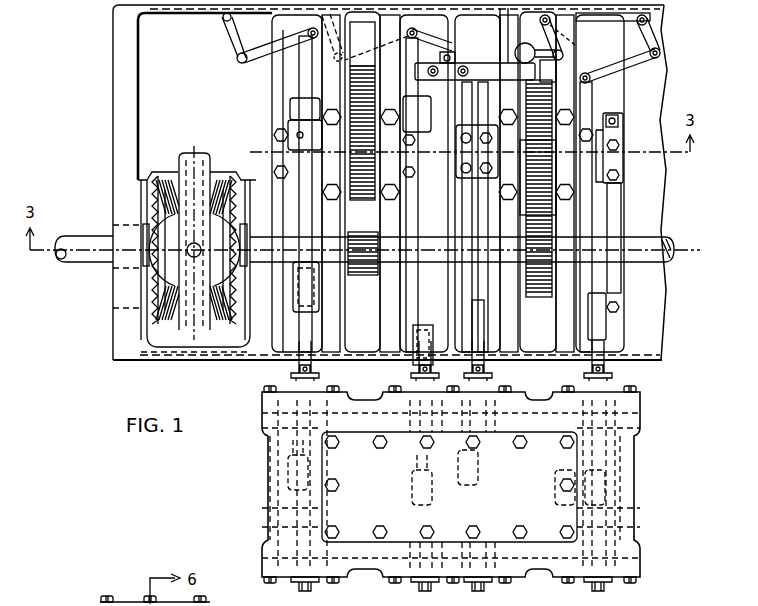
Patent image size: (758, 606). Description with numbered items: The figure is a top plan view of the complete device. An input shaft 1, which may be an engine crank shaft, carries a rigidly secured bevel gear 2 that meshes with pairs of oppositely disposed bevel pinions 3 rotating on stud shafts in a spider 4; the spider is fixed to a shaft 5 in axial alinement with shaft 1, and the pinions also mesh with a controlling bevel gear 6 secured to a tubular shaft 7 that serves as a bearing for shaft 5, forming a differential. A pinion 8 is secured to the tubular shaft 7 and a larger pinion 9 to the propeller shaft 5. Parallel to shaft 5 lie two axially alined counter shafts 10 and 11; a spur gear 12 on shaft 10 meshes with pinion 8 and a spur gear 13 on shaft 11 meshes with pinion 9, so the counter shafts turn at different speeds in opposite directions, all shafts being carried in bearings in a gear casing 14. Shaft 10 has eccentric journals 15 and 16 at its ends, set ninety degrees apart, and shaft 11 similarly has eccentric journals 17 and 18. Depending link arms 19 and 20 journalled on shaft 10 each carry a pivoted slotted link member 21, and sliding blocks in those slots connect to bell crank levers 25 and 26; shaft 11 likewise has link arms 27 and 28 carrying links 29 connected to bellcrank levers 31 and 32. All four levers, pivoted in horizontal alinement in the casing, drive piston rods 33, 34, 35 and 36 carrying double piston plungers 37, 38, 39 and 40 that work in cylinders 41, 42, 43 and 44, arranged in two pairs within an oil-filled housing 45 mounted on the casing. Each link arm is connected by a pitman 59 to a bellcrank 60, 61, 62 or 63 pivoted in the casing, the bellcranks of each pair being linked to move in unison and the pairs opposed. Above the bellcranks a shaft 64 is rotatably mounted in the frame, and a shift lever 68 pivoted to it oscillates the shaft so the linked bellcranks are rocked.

The shaft 1 is at (89, 238).
The bevel gear 2 is at (152, 197).
The bevel pinions 3 is at (175, 176).
The spider 4 is at (192, 151).
The shaft 5 is at (673, 258).
The controlling bevel gear 6 is at (237, 178).
The tubular shaft 7 is at (246, 328).
The pinion 8 is at (358, 276).
The pinion 9 is at (538, 182).
The counter shaft 10 is at (296, 123).
The counter shaft 11 is at (625, 125).
The spur gear 12 is at (333, 48).
The spur gear 13 is at (548, 90).
The gear casing 14 is at (125, 89).
The eccentric journal 15 is at (290, 141).
The eccentric journal 16 is at (448, 130).
The eccentric journal 17 is at (470, 125).
The eccentric journal 18 is at (624, 172).
The link arm 19 is at (298, 102).
The link arm 20 is at (418, 149).
The link member 21 is at (285, 74).
The bell crank lever 25 is at (306, 278).
The bell crank lever 26 is at (433, 342).
The link arm 27 is at (529, 199).
The link arm 28 is at (589, 128).
The links 29 is at (462, 206).
The bellcrank lever 31 is at (486, 340).
The bellcrank lever 32 is at (612, 306).
The piston rod 33 is at (298, 366).
The piston rod 34 is at (415, 372).
The piston rod 35 is at (472, 360).
The piston rod 36 is at (605, 364).
The double piston plunger 37 is at (290, 445).
The double piston plunger 38 is at (412, 494).
The double piston plunger 39 is at (480, 507).
The double piston plunger 40 is at (620, 515).
The cylinder 41 is at (278, 491).
The cylinder 42 is at (400, 497).
The cylinder 43 is at (512, 480).
The cylinder 44 is at (620, 462).
The housing 45 is at (273, 535).
The pitman 59 is at (238, 58).
The bellcrank 60 is at (231, 37).
The bellcrank 61 is at (353, 58).
The bellcrank 62 is at (556, 29).
The bellcrank 63 is at (660, 31).
The shaft 64 is at (452, 40).
The shift lever 68 is at (456, 58).